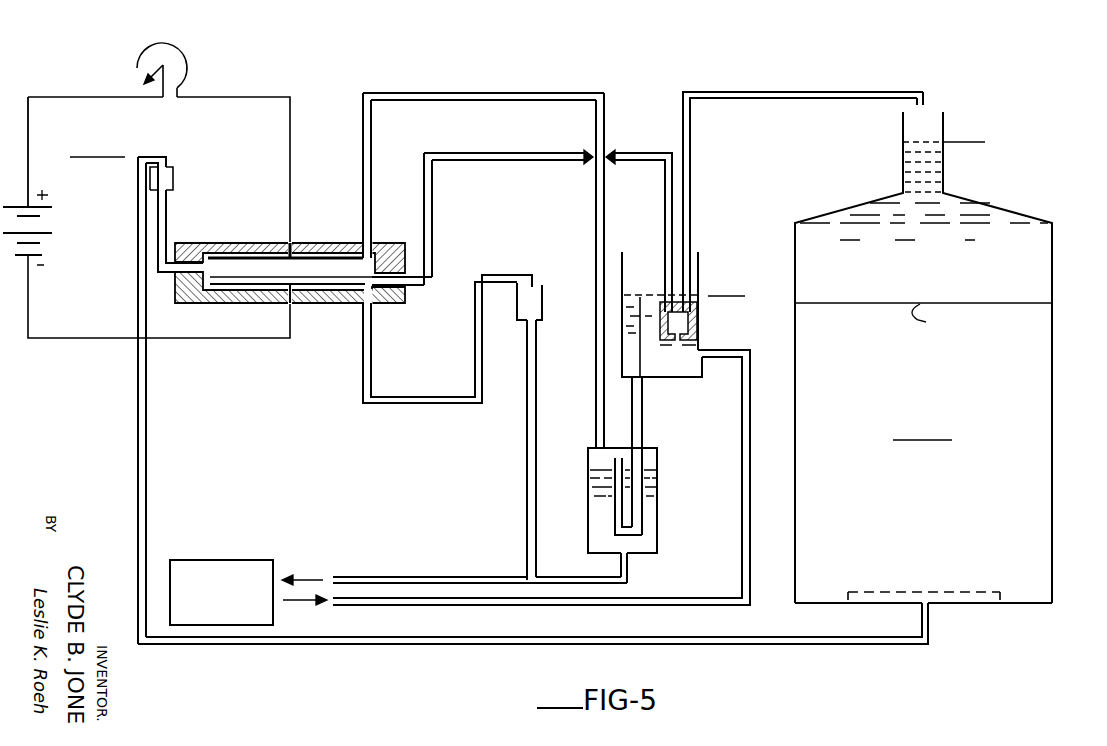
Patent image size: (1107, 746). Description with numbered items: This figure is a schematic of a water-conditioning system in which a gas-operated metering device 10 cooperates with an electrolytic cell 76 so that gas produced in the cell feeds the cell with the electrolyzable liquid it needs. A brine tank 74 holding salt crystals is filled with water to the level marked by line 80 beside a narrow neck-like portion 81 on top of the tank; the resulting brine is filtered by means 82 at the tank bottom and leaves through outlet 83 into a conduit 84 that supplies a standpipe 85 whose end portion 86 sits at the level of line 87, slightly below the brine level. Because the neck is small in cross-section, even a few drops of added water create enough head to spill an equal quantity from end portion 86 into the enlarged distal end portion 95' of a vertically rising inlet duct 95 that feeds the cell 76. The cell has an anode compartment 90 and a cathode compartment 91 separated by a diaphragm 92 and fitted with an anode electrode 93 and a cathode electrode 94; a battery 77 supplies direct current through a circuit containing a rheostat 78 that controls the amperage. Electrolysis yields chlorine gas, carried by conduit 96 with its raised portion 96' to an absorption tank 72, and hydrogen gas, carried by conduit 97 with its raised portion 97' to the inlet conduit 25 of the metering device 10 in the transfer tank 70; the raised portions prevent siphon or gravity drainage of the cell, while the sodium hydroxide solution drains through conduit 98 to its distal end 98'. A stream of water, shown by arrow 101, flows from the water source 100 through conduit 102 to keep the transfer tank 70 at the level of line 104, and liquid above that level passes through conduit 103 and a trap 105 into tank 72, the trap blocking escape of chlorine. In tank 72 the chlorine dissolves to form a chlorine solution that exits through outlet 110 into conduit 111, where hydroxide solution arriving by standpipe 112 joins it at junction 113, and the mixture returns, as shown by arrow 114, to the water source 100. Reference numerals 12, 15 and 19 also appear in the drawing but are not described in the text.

The metering device 10 is at (656, 338).
The stopper plug 12 is at (685, 322).
The conduit 15 is at (806, 80).
The conduit outlet 19 is at (930, 104).
The inlet conduit 25 is at (665, 232).
The transfer tank 70 is at (700, 274).
The absorption tank 72 is at (657, 466).
The brine tank 74 is at (1052, 374).
The electrolytic cell 76 is at (228, 306).
The battery 77 is at (57, 231).
The rheostat 78 is at (184, 56).
The line 80 is at (966, 142).
The neck-like portion 81 is at (944, 166).
The filtering means 82 is at (960, 591).
The outlet 83 is at (928, 610).
The conduit 84 is at (610, 644).
The standpipe 85 is at (147, 394).
The end portion 86 is at (153, 157).
The line 87 is at (103, 160).
The anode compartment 90 is at (236, 266).
The cathode compartment 91 is at (318, 285).
The diaphragm 92 is at (310, 275).
The anode electrode 93 is at (258, 262).
The cathode electrode 94 is at (345, 280).
The inlet duct 95 is at (180, 222).
The enlarged distal end portion 95' is at (181, 170).
The conduit 96 is at (483, 270).
The conduit portion 96' is at (483, 84).
The conduit 97 is at (447, 219).
The conduit portion 97' is at (508, 145).
The conduit 98 is at (447, 339).
The distal end 98' is at (512, 280).
The water source 100 is at (208, 560).
The arrow 101 is at (305, 600).
The conduit 102 is at (751, 430).
The conduit 103 is at (645, 418).
The line 104 is at (727, 296).
The trap 105 is at (645, 514).
The outlet 110 is at (629, 568).
The conduit 111 is at (418, 577).
The standpipe 112 is at (527, 441).
The junction 113 is at (527, 575).
The arrow 114 is at (310, 578).